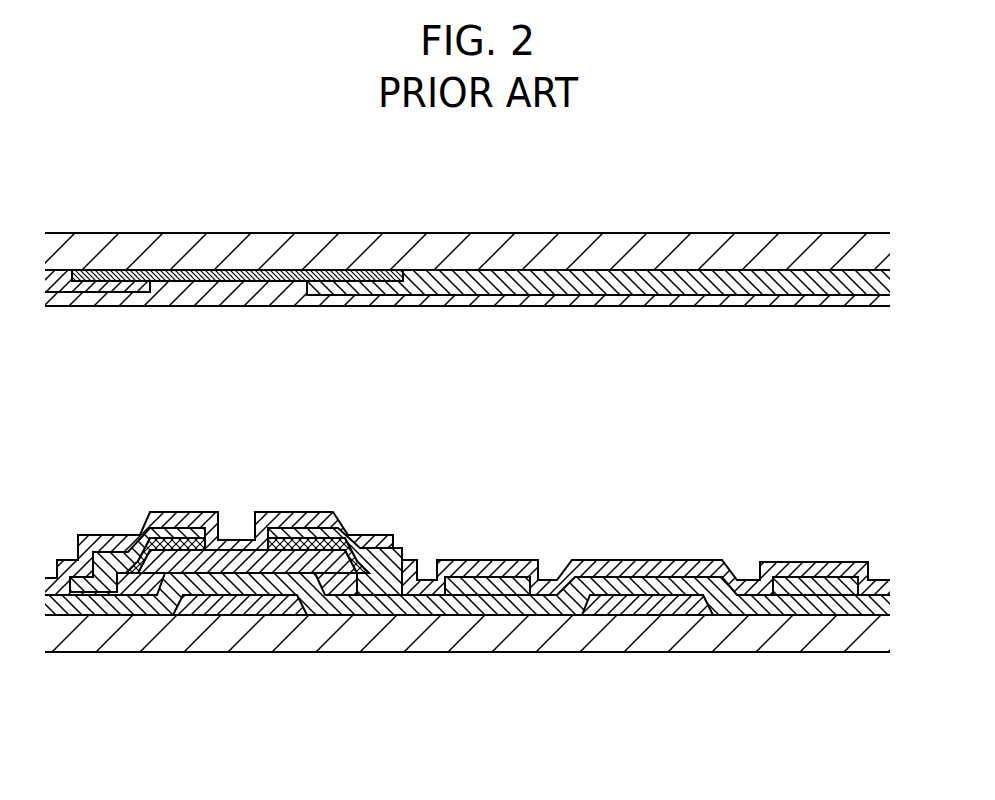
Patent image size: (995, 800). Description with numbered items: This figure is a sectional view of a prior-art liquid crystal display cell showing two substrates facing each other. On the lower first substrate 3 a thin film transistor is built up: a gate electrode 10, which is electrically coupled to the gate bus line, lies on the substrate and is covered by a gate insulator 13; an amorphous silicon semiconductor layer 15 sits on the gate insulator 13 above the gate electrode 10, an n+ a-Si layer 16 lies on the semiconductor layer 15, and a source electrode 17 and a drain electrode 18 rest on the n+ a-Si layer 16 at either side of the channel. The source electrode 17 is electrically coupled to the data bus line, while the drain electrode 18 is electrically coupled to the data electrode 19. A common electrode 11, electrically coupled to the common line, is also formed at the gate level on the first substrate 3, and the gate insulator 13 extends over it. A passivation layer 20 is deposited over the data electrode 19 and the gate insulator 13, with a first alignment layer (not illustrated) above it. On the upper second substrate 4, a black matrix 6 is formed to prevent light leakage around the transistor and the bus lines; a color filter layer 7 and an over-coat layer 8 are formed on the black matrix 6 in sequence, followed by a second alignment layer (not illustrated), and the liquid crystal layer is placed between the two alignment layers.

The first substrate 3 is at (800, 630).
The second substrate 4 is at (678, 252).
The black matrix 6 is at (199, 278).
The color filter layer 7 is at (455, 280).
The over-coat layer 8 is at (608, 300).
The gate electrode 10 is at (233, 604).
The common electrode 11 is at (650, 602).
The gate insulator 13 is at (467, 600).
The amorphous silicon semiconductor layer 15 is at (345, 562).
The n+ a-Si layer 16 is at (146, 578).
The source electrode 17 is at (137, 576).
The drain electrode 18 is at (288, 525).
The data electrode 19 is at (488, 576).
The passivation layer 20 is at (386, 536).